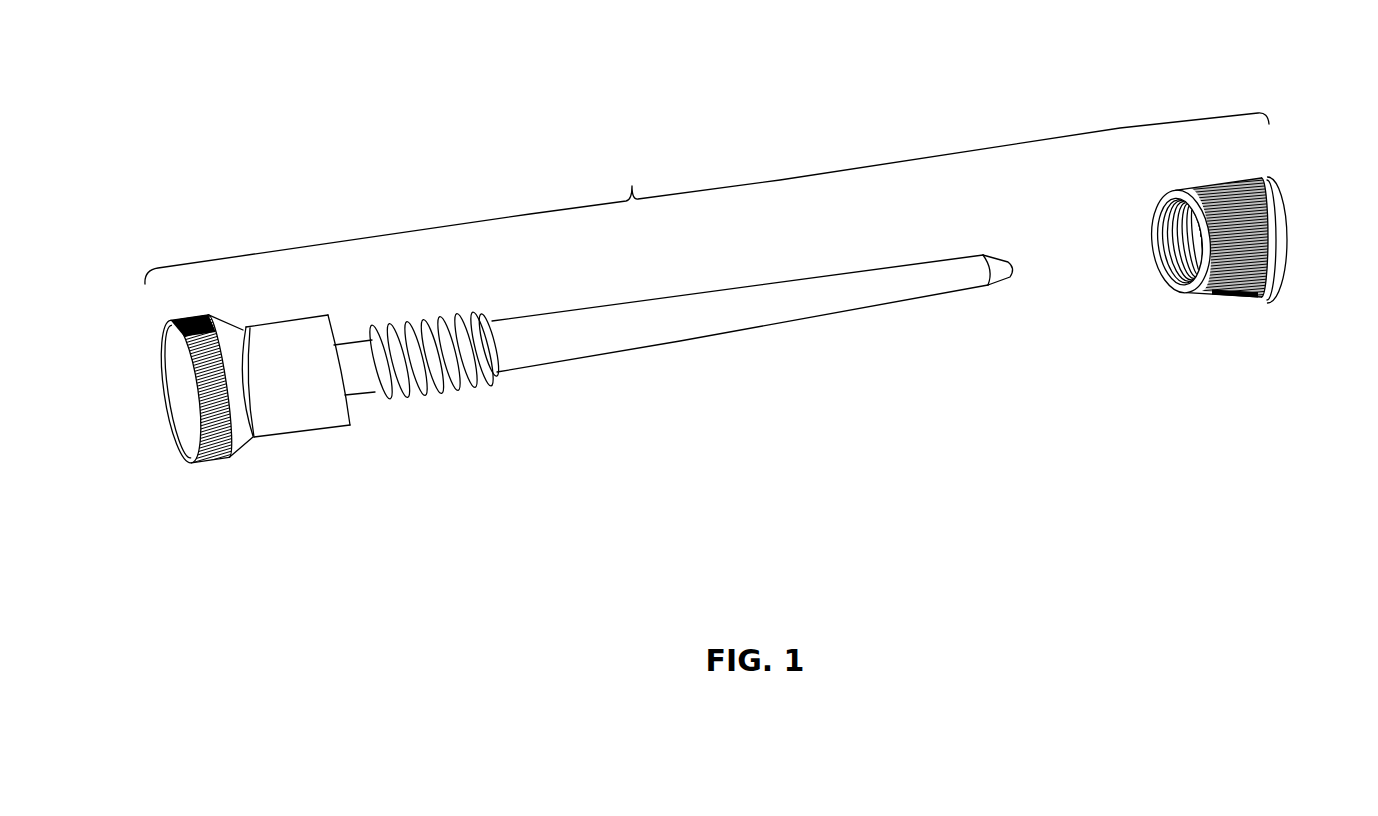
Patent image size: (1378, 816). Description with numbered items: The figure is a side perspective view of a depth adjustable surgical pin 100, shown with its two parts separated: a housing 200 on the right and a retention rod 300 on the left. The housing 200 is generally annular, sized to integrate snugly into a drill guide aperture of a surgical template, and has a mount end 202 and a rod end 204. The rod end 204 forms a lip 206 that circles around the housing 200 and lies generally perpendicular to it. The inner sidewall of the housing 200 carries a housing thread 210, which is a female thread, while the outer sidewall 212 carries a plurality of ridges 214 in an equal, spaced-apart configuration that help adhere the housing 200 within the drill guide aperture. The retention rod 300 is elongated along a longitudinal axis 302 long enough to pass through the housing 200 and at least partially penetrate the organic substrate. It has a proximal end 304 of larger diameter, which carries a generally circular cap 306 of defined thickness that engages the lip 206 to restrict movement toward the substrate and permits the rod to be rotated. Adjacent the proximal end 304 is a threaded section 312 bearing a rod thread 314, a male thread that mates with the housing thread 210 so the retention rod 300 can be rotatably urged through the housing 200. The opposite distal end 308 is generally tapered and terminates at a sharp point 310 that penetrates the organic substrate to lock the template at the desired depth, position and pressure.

The depth adjustable surgical pin 100 is at (270, 131).
The housing 200 is at (1231, 395).
The mount end 202 is at (1138, 255).
The rod end 204 is at (1303, 220).
The lip 206 is at (1272, 178).
The housing thread 210 is at (1184, 272).
The outer sidewall 212 is at (1252, 296).
The ridges 214 is at (1218, 188).
The retention rod 300 is at (645, 470).
The longitudinal axis 302 is at (707, 198).
The proximal end 304 is at (308, 417).
The cap 306 is at (180, 428).
The distal end 308 is at (977, 284).
The sharp point 310 is at (1002, 266).
The threaded section 312 is at (378, 428).
The rod thread 314 is at (487, 382).